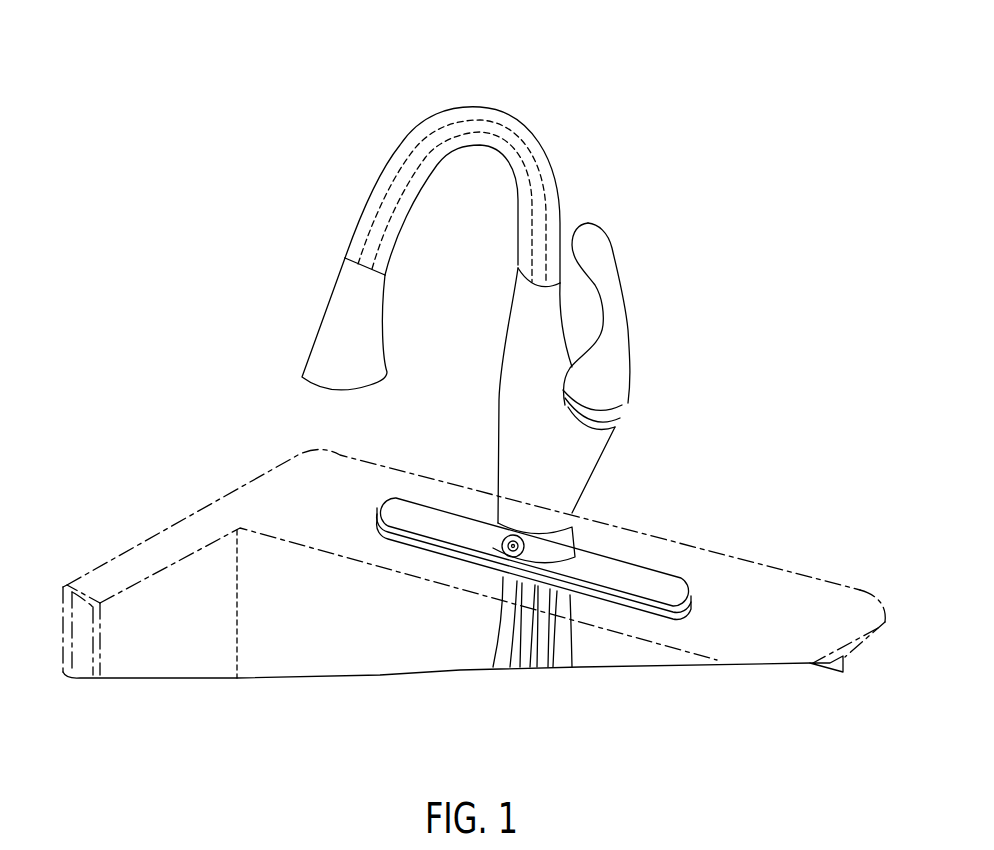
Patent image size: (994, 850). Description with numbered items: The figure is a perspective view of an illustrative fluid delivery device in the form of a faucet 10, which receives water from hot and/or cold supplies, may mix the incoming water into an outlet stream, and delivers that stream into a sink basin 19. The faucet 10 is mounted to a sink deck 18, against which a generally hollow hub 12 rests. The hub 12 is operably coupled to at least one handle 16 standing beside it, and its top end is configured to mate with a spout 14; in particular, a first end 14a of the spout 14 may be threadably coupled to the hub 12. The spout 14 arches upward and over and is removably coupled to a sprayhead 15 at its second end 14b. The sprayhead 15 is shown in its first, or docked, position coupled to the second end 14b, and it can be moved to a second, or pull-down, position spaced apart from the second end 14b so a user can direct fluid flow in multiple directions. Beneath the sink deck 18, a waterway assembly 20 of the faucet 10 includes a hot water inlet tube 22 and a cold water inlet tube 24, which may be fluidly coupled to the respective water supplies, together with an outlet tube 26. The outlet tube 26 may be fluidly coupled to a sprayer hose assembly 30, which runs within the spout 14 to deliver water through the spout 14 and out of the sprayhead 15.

The faucet 10 is at (581, 75).
The hub 12 is at (512, 413).
The spout 14 is at (423, 177).
The first end of spout 14a is at (533, 283).
The second end of spout 14b is at (352, 258).
The sprayhead 15 is at (325, 328).
The handle 16 is at (620, 338).
The sink deck 18 is at (740, 578).
The sink basin 19 is at (305, 617).
The waterway assembly 20 is at (571, 646).
The hot water inlet tube 22 is at (567, 660).
The cold water inlet tube 24 is at (498, 660).
The outlet tube 26 is at (545, 660).
The sprayer hose assembly 30 is at (419, 125).